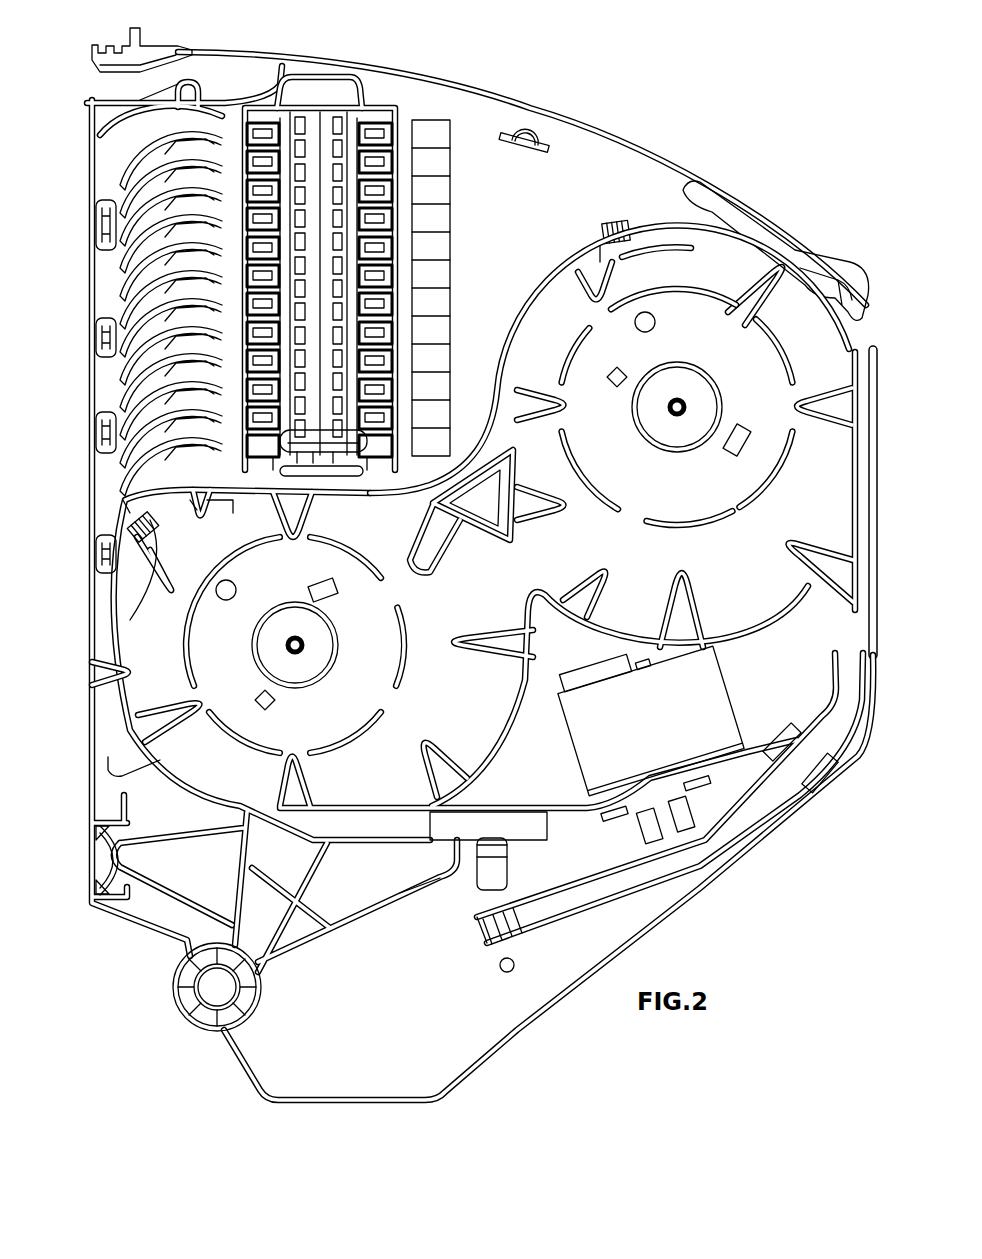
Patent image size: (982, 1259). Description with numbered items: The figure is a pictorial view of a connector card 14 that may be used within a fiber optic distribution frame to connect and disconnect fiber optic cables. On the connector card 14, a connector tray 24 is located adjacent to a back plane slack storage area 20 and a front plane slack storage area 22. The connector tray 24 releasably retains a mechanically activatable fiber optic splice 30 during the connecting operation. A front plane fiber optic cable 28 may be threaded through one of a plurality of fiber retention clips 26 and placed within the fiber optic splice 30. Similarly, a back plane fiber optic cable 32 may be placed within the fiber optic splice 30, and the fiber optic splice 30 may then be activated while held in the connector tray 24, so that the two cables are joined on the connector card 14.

The connector card 14 is at (588, 130).
The back plane slack storage area 20 is at (815, 345).
The front plane slack storage area 22 is at (145, 683).
The connector tray 24 is at (388, 104).
The fiber retention clips 26 is at (89, 341).
The front plane fiber optic cable 28 is at (112, 621).
The fiber optic splice 30 is at (348, 447).
The back plane fiber optic cable 32 is at (533, 310).